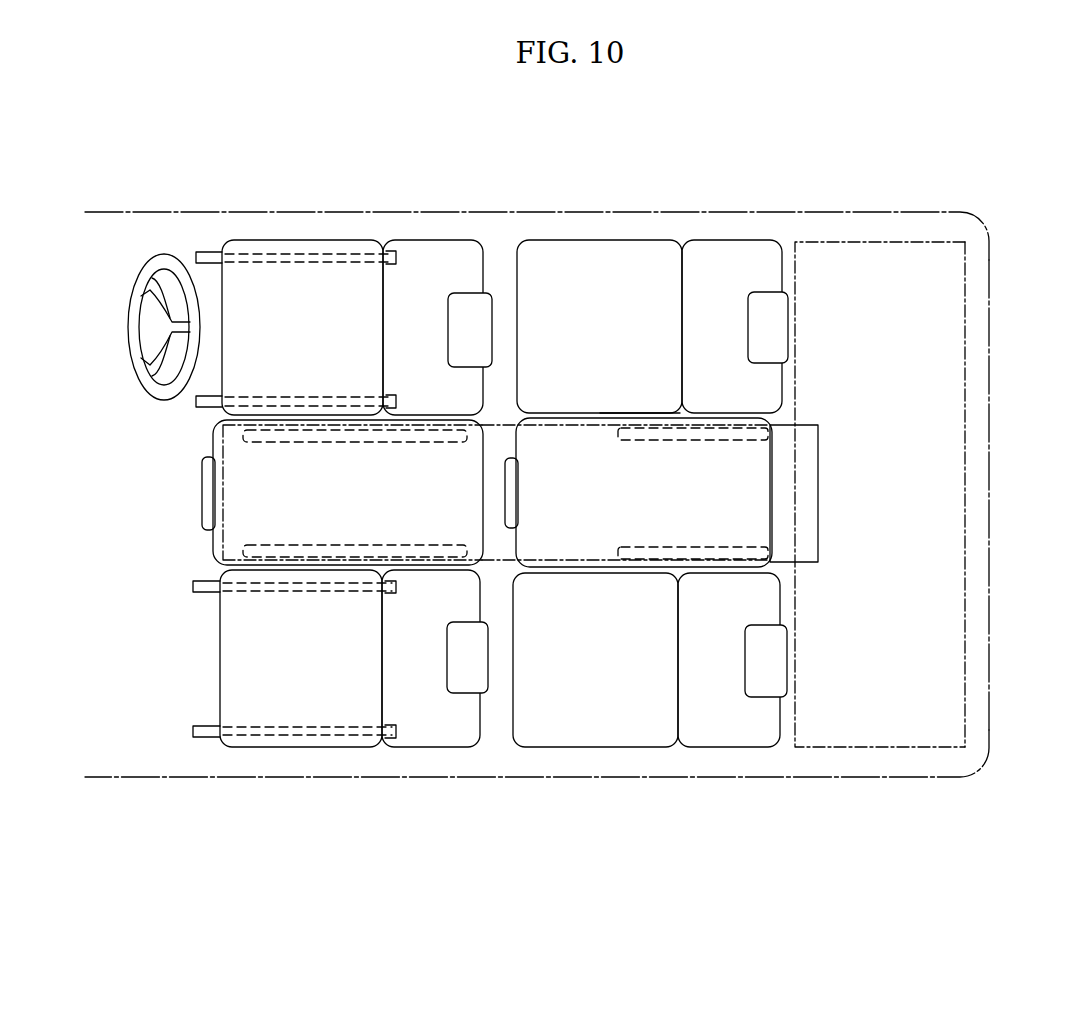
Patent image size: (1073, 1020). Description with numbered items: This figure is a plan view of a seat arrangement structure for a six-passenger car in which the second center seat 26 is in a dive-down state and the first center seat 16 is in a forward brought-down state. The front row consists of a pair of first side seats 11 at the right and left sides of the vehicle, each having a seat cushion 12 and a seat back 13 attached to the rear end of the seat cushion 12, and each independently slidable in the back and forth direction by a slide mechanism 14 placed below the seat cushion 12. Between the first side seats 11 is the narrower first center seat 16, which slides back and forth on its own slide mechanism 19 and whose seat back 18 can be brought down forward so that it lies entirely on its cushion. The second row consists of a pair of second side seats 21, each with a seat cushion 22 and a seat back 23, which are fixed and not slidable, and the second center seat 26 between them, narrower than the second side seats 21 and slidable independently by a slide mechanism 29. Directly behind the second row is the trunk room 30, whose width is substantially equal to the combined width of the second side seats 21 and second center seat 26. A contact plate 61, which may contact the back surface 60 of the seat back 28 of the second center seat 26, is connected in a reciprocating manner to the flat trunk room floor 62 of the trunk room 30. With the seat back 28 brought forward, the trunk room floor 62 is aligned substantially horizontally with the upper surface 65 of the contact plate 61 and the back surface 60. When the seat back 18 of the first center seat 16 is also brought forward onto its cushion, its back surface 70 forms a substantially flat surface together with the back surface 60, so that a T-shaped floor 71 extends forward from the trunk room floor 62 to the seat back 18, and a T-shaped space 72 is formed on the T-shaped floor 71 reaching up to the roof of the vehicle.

The first side seat 11 is at (342, 503).
The seat cushion 12 is at (318, 290).
The seat back 13 is at (418, 253).
The slide mechanism 14 is at (270, 241).
The first center seat 16 is at (200, 492).
The seat back 18 is at (288, 451).
The slide mechanism 19 is at (263, 443).
The second side seat 21 is at (650, 508).
The seat cushion 22 is at (557, 250).
The seat back 23 is at (710, 250).
The second center seat 26 is at (657, 413).
The seat back 28 is at (627, 507).
The slide mechanism 29 is at (648, 545).
The trunk room 30 is at (927, 710).
The back surface 60 is at (553, 440).
The contact plate 61 is at (840, 493).
The trunk room floor 62 is at (937, 540).
The upper surface 65 is at (808, 534).
The back surface 70 is at (292, 420).
The T-shaped floor 71 is at (965, 630).
The T-shaped space 72 is at (965, 392).